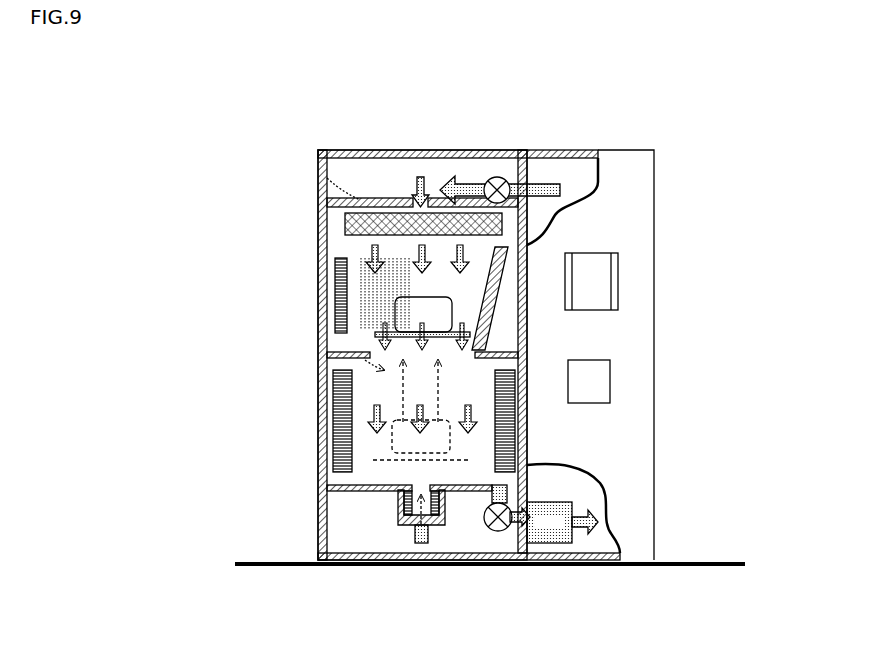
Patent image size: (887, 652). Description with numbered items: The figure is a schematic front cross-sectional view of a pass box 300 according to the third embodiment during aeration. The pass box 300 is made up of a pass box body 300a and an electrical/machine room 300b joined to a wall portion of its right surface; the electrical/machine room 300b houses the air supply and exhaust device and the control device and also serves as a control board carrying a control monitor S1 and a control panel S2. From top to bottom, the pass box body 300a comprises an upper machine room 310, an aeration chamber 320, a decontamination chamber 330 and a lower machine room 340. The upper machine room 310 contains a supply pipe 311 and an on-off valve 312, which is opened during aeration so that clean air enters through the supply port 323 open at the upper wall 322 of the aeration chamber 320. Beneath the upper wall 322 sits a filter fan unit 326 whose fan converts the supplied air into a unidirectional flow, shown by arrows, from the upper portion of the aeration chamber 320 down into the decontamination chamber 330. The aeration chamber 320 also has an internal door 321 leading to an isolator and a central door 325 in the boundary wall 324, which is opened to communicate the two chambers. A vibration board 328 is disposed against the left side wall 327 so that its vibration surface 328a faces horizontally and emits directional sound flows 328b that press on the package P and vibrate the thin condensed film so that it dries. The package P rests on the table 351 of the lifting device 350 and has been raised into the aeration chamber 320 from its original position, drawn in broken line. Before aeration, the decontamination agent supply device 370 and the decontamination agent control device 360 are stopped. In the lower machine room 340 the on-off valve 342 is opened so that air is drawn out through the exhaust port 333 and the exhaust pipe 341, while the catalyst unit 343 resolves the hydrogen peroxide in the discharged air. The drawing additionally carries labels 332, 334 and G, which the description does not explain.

The pass box 300 is at (460, 112).
The pass box body 300a is at (360, 148).
The electrical/machine room 300b is at (615, 150).
The upper machine room 310 is at (303, 185).
The supply pipe 311 is at (470, 150).
The on-off valve 312 is at (500, 148).
The aeration chamber 320 is at (308, 323).
The internal door 321 is at (598, 192).
The upper wall 322 is at (345, 222).
The supply port 323 is at (413, 190).
The boundary wall 324 is at (375, 340).
The central door 325 is at (548, 250).
The filter fan unit 326 is at (318, 178).
The left side wall 327 is at (330, 240).
The vibration board 328 is at (327, 298).
The vibration surface 328a is at (335, 260).
The sound flow 328b is at (358, 276).
The decontamination chamber 330 is at (307, 447).
The lower partition 332 is at (327, 486).
The exhaust port 333 is at (490, 528).
The collector 334 is at (403, 527).
The lower machine room 340 is at (307, 520).
The exhaust pipe 341 is at (600, 563).
The on-off valve 342 is at (522, 530).
The catalyst unit 343 is at (549, 545).
The lifting device 350 is at (333, 393).
The table 351 is at (395, 312).
The decontamination agent control device 360 is at (424, 421).
The decontamination agent supply device 370 is at (428, 545).
The package P is at (470, 315).
The control monitor S1 is at (618, 275).
The control panel S2 is at (610, 362).
The ground G is at (700, 562).